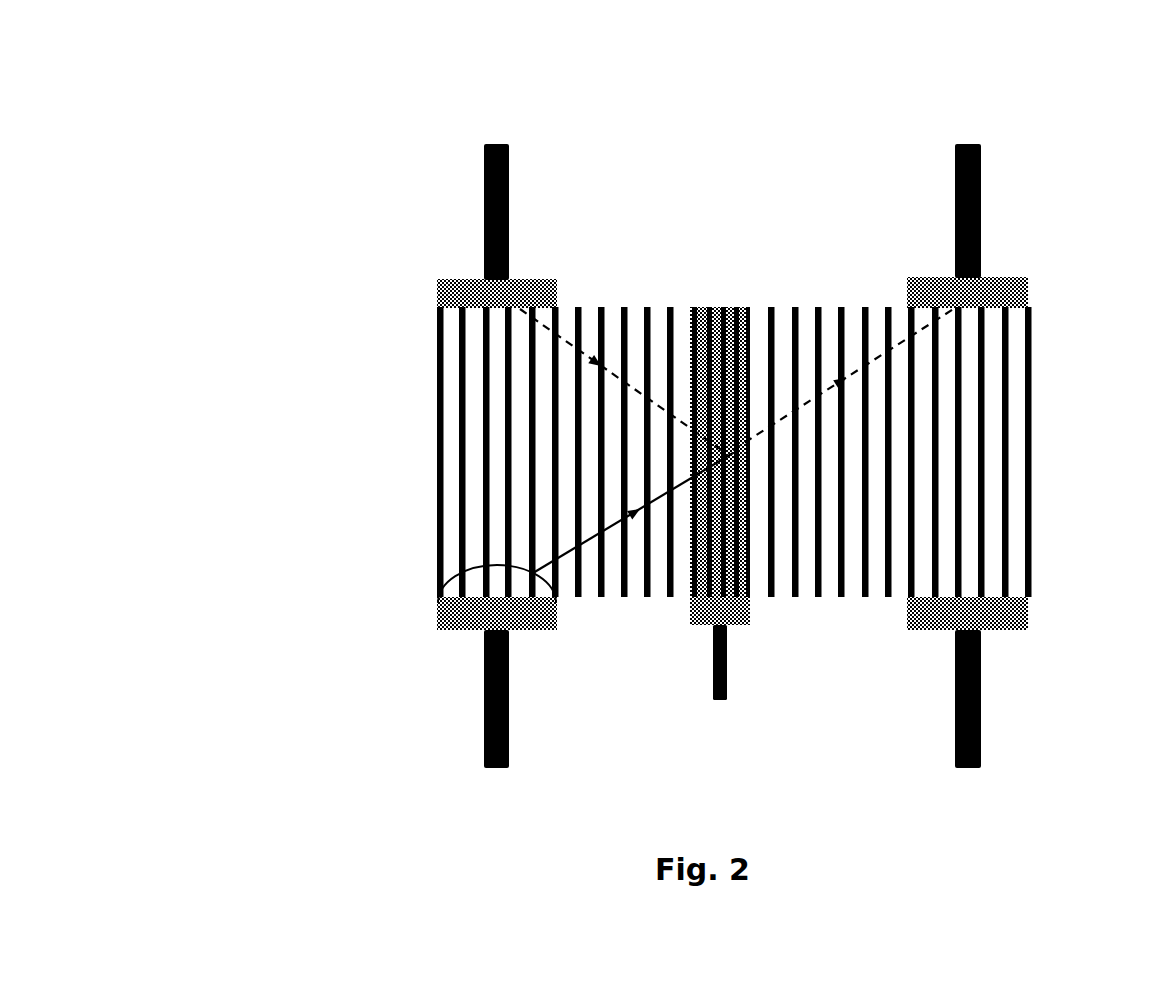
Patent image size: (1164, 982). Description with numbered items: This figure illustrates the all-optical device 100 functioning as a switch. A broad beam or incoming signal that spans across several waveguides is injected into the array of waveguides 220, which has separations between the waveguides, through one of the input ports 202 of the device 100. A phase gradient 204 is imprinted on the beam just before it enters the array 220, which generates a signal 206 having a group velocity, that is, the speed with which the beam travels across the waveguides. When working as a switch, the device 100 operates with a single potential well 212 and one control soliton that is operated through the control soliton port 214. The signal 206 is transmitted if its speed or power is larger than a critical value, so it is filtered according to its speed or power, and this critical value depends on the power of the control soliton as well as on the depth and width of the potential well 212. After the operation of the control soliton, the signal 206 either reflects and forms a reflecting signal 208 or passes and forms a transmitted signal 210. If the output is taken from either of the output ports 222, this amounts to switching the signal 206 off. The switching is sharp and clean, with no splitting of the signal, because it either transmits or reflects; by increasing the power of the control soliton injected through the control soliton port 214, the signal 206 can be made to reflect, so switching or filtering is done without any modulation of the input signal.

The all-optical device 100 is at (322, 135).
The input port 202 is at (487, 697).
The phase gradient 204 is at (437, 614).
The signal 206 is at (437, 592).
The reflecting signal 208 is at (503, 452).
The transmitted signal 210 is at (888, 365).
The potential well 212 is at (725, 307).
The control soliton port 214 is at (713, 677).
The array of waveguides 220 is at (460, 480).
The output ports 222 is at (955, 213).